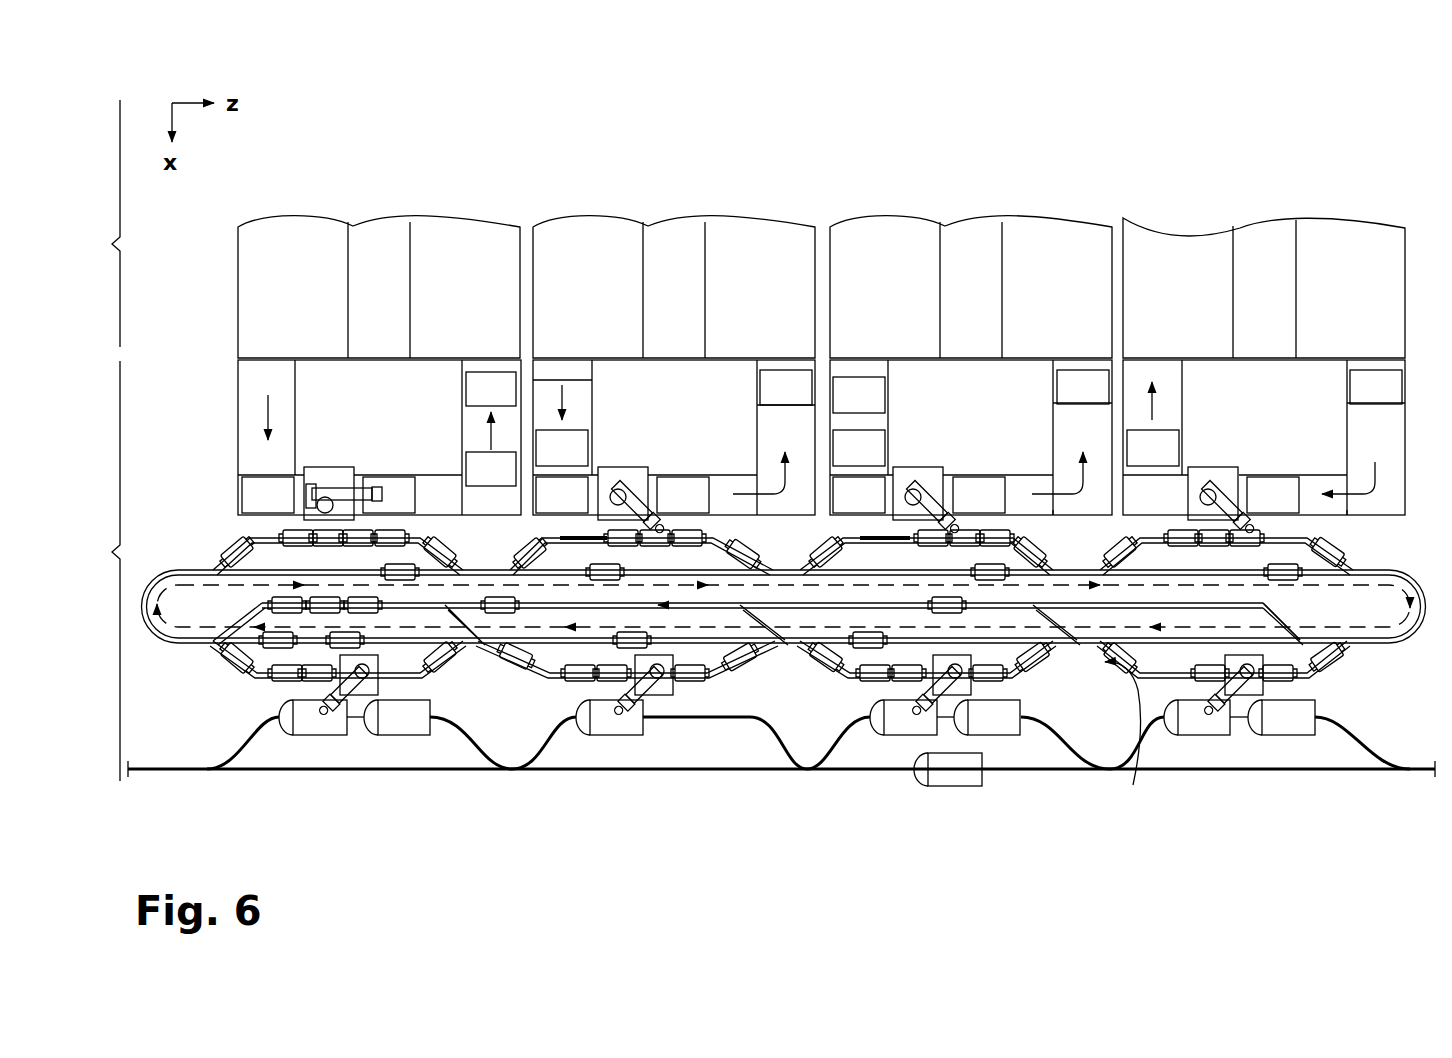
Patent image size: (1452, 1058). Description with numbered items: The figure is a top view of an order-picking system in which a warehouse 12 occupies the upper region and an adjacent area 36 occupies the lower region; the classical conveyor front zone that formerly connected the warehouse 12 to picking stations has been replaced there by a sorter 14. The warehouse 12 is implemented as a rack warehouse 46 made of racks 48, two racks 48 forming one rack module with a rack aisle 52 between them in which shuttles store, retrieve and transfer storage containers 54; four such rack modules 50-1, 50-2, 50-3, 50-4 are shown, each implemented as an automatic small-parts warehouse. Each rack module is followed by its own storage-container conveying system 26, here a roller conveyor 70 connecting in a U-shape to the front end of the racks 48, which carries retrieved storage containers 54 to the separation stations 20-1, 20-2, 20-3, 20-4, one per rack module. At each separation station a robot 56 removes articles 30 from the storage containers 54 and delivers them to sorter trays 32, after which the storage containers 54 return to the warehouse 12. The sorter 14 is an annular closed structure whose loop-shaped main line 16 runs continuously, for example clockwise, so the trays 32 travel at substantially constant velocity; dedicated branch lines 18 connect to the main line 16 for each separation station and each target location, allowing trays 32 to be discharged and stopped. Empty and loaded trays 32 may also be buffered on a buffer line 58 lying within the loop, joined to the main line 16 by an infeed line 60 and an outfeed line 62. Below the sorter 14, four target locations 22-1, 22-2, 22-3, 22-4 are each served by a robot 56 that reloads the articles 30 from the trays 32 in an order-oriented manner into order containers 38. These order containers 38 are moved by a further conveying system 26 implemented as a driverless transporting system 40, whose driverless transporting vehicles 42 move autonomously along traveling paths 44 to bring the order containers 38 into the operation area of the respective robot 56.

The warehouse 12 is at (101, 223).
The sorter 14 is at (512, 772).
The main line 16 is at (1400, 568).
The branch line 18 is at (238, 527).
The separation station 20-1 is at (328, 460).
The separation station 20-2 is at (622, 460).
The separation station 20-3 is at (918, 460).
The separation station 20-4 is at (1213, 460).
The target location 22-1 is at (350, 740).
The target location 22-2 is at (650, 740).
The target location 22-3 is at (940, 740).
The target location 22-4 is at (1230, 740).
The conveying system 26 is at (234, 429).
The article 30 is at (653, 520).
The sorter tray 32 is at (603, 578).
The area 36 is at (101, 571).
The order container 38 is at (797, 717).
The driverless transporting system 40 is at (768, 780).
The driverless transporting vehicle 42 is at (283, 737).
The traveling path 44 is at (728, 772).
The rack warehouse 46 is at (578, 140).
The rack 48 is at (309, 303).
The rack module 50-1 is at (383, 203).
The rack module 50-2 is at (676, 205).
The rack module 50-3 is at (972, 205).
The rack module 50-4 is at (1265, 203).
The rack aisle 52 is at (395, 303).
The storage container 54 is at (255, 508).
The robot 56 is at (355, 468).
The buffer line 58 is at (1029, 735).
The infeed line 60 is at (1284, 610).
The outfeed line 62 is at (233, 612).
The roller conveyor 70 is at (1098, 517).